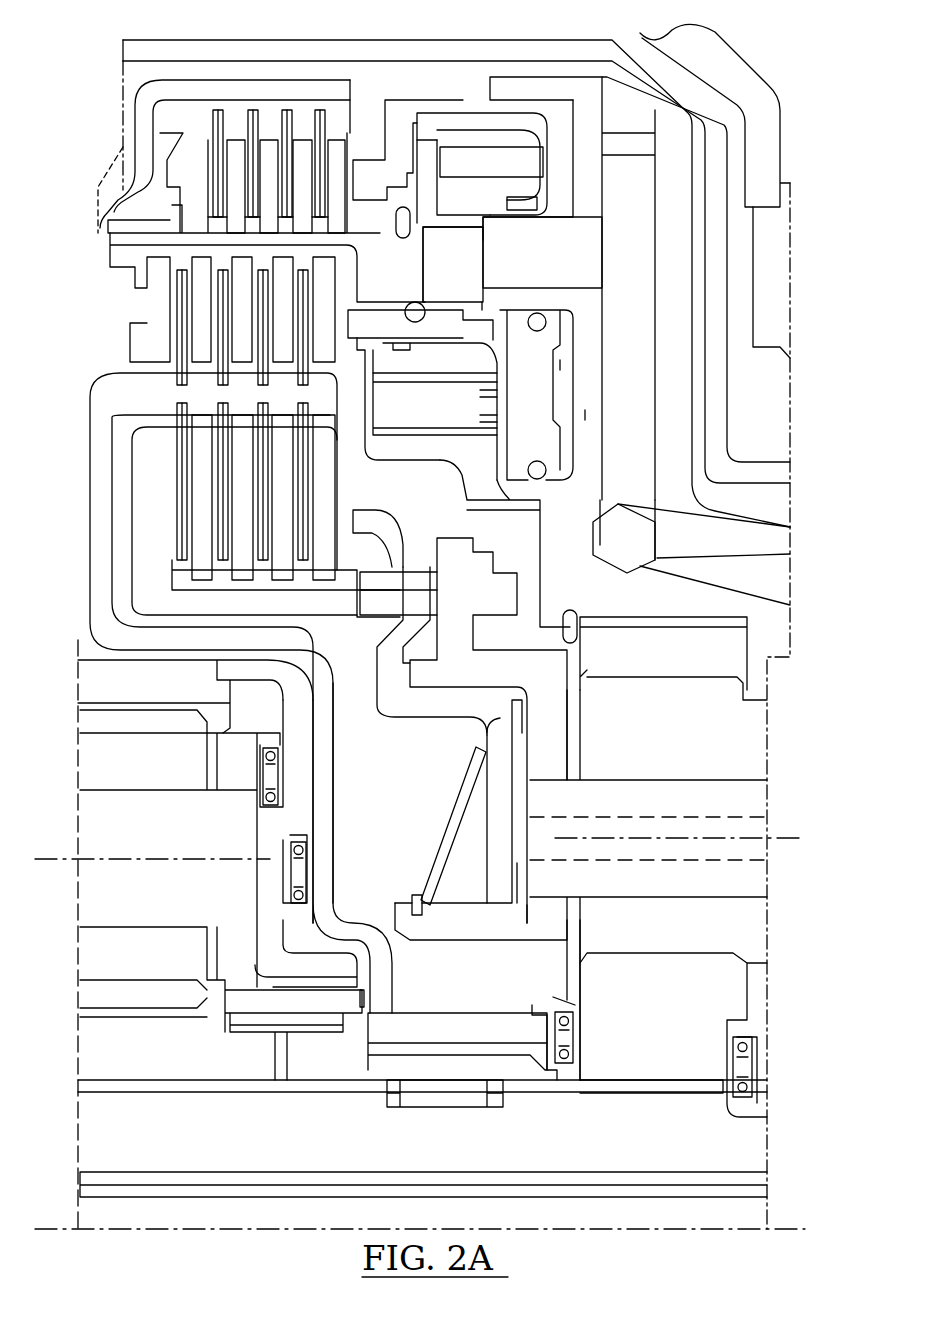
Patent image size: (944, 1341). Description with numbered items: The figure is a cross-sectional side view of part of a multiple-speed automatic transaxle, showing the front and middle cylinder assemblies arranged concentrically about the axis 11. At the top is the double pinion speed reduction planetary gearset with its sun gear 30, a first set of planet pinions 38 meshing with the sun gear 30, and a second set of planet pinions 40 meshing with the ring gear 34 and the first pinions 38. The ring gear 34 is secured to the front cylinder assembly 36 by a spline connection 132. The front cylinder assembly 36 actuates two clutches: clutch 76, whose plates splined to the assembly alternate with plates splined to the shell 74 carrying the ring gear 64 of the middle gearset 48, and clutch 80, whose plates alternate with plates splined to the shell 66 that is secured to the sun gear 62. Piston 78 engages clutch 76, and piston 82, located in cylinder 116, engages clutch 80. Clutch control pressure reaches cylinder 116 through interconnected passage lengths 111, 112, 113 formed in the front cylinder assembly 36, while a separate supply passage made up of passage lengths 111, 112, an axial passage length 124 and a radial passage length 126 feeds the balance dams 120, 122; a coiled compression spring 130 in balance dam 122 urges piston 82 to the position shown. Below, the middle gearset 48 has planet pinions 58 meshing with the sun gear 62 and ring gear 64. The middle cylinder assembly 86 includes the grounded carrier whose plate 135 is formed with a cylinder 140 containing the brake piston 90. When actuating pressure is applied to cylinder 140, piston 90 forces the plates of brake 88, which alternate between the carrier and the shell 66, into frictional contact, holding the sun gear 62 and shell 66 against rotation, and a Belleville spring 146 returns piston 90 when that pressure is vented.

The axis 11 is at (570, 1231).
The sun gear 30 is at (673, 1035).
The ring gear 34 is at (673, 658).
The front cylinder assembly 36 is at (743, 530).
The first set of planet pinions 38 is at (598, 937).
The second set of planet pinions 40 is at (648, 885).
The middle gearset 48 is at (157, 1236).
The planet pinions 58 is at (193, 843).
The sun gear 62 is at (221, 1000).
The ring gear 64 is at (195, 696).
The shell 66 is at (327, 772).
The shell 74 is at (140, 145).
The clutch 76 is at (353, 134).
The piston 78 is at (470, 117).
The clutch 80 is at (341, 289).
The piston 82 is at (536, 395).
The middle cylinder assembly 86 is at (394, 774).
The brake 88 is at (156, 472).
The piston 90 is at (497, 838).
The passage length 111 is at (715, 571).
The passage length 112 is at (624, 515).
The passage length 113 is at (587, 415).
The cylinder 116 is at (565, 367).
The balance dam 120 is at (490, 181).
The balance dam 122 is at (427, 409).
The axial passage length 124 is at (542, 252).
The radial passage length 126 is at (453, 264).
The coiled compression spring 130 is at (417, 473).
The spline connection 132 is at (713, 617).
The second plate 135 is at (496, 920).
The cylinder 140 is at (513, 740).
The Belleville spring 146 is at (440, 870).